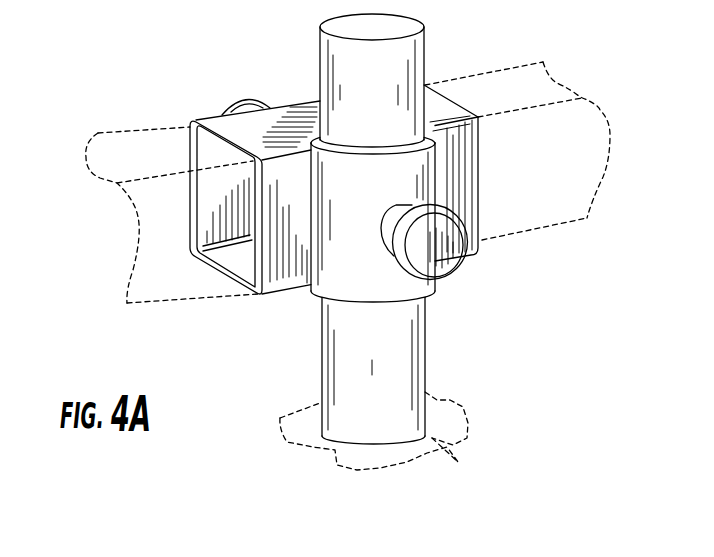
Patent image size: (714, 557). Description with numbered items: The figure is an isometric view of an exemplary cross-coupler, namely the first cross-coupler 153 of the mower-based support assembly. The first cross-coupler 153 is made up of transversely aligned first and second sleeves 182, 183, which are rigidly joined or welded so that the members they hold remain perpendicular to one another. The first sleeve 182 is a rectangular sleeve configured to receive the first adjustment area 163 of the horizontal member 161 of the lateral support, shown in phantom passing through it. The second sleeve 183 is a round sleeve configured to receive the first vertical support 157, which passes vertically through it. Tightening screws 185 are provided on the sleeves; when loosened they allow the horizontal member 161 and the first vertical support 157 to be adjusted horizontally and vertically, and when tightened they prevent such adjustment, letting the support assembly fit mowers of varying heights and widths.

The first cross-coupler 153 is at (352, 235).
The first vertical support 157 is at (405, 367).
The horizontal member 161 is at (351, 153).
The first horizontal adjustment area 163 is at (569, 189).
The first sleeve 182 is at (291, 272).
The second sleeve 183 is at (415, 175).
The tightening screws 185 is at (240, 110).